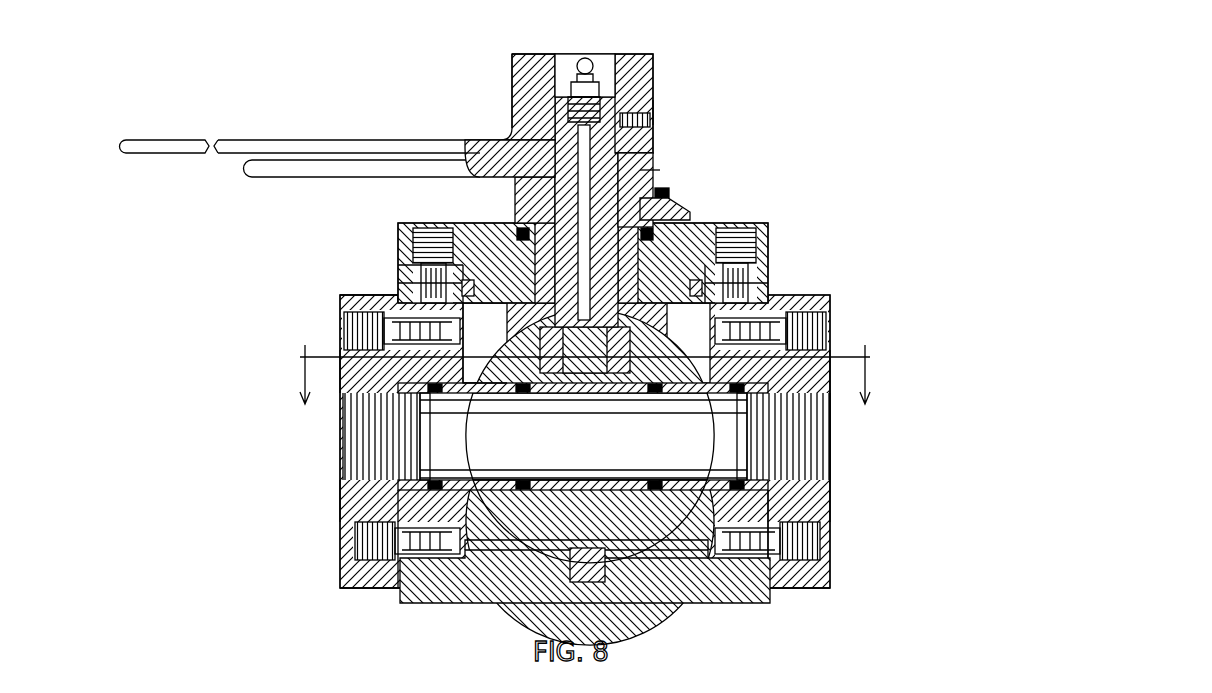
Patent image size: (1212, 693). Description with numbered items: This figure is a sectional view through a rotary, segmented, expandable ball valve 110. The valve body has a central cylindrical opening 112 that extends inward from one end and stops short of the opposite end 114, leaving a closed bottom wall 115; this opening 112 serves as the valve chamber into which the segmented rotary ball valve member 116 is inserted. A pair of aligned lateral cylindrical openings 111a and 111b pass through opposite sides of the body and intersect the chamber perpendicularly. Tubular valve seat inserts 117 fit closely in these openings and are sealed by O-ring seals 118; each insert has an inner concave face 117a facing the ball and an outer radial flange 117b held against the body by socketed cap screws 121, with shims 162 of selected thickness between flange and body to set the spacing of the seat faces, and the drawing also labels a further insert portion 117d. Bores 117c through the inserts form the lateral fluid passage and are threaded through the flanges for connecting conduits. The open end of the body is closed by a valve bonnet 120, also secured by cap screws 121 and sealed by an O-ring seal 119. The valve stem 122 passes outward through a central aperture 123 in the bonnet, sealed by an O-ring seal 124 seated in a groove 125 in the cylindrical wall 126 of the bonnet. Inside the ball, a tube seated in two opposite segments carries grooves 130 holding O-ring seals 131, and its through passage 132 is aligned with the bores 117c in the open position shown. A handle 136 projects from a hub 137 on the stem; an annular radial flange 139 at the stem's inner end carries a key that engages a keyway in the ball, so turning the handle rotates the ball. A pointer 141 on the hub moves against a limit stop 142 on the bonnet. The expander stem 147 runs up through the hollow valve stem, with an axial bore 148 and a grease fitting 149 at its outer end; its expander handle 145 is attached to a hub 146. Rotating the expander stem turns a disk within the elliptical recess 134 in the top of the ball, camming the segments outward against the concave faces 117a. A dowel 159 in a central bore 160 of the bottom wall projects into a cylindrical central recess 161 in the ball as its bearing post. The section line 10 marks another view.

The section line 10 is at (589, 385).
The rotary, segmented, expandable ball valve 110 is at (808, 131).
The lateral cylindrical opening 111a is at (490, 368).
The lateral cylindrical opening 111b is at (840, 398).
The central cylindrical opening 112 is at (835, 352).
The opposite end 114 is at (770, 582).
The closed bottom wall 115 is at (672, 562).
The segmented rotary ball valve member 116 is at (442, 602).
The tubular valve seat insert 117 is at (446, 396).
The inner concave face 117a is at (480, 396).
The outer radial flange 117b is at (352, 506).
The bore 117c is at (345, 440).
The body shoulder 117d is at (352, 468).
The O-ring seal 118 is at (445, 480).
The O-ring seal 119 is at (440, 283).
The valve bonnet 120 is at (770, 252).
The socketed cap screw 121 is at (758, 240).
The valve stem 122 is at (655, 158).
The central aperture 123 is at (520, 236).
The O-ring seal 124 is at (533, 262).
The groove 125 is at (540, 250).
The cylindrical wall 126 is at (702, 282).
The groove 130 is at (532, 401).
The O-ring seal 131 is at (522, 480).
The through passage 132 is at (590, 477).
The elliptical recess 134 is at (608, 375).
The handle 136 is at (248, 178).
The hub 137 is at (655, 174).
The annular radial flange 139 is at (760, 300).
The pointer 141 is at (690, 210).
The limit stop 142 is at (670, 192).
The expander handle 145 is at (235, 140).
The hub 146 is at (655, 111).
The expander stem 147 is at (577, 125).
The axial bore 148 is at (655, 96).
The grease fitting 149 is at (600, 58).
The dowel 159 is at (662, 592).
The central bore 160 is at (572, 574).
The cylindrical central recess 161 is at (508, 562).
The shim 162 is at (398, 582).